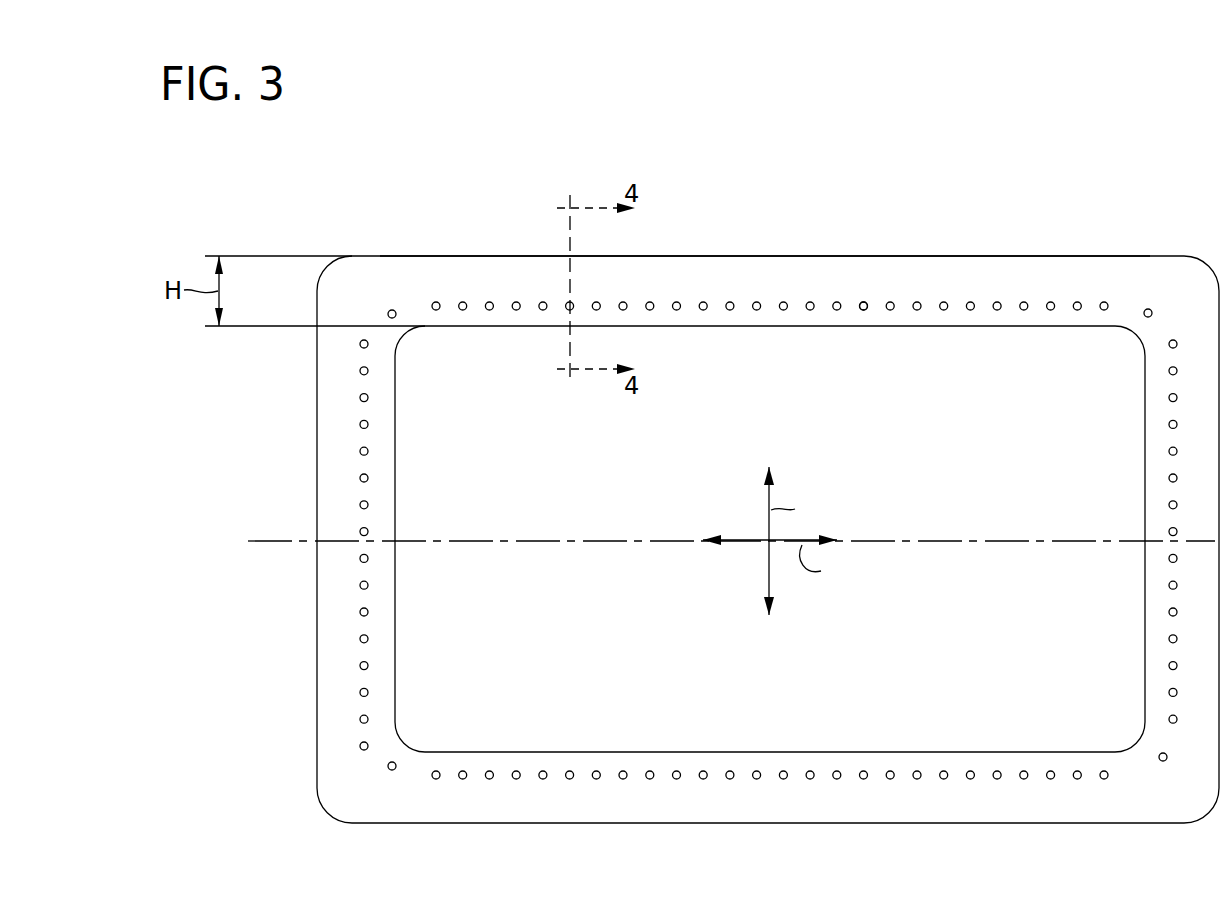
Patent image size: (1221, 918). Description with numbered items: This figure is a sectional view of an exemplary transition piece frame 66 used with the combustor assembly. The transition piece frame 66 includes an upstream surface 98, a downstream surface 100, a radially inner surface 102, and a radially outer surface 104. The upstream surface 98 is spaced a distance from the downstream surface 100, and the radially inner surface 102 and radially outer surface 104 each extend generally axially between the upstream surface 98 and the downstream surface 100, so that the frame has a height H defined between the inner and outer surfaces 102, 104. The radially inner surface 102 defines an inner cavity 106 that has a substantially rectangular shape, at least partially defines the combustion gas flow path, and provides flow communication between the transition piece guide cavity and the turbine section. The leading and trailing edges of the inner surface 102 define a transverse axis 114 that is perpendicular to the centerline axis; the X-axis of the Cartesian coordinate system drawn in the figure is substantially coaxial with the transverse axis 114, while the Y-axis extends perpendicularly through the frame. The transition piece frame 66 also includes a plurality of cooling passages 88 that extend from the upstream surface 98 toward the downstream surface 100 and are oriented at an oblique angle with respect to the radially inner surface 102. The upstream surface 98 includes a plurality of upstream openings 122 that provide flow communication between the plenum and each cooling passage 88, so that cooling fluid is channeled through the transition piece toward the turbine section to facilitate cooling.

The transition piece frame 66 is at (1037, 195).
The cooling passages 88 is at (785, 300).
The upstream surface 98 is at (680, 276).
The downstream surface 100 is at (976, 237).
The radially inner surface 102 is at (822, 327).
The radially outer surface 104 is at (1062, 256).
The inner cavity 106 is at (893, 463).
The transverse axis 114 is at (280, 540).
The upstream openings 122 is at (866, 296).